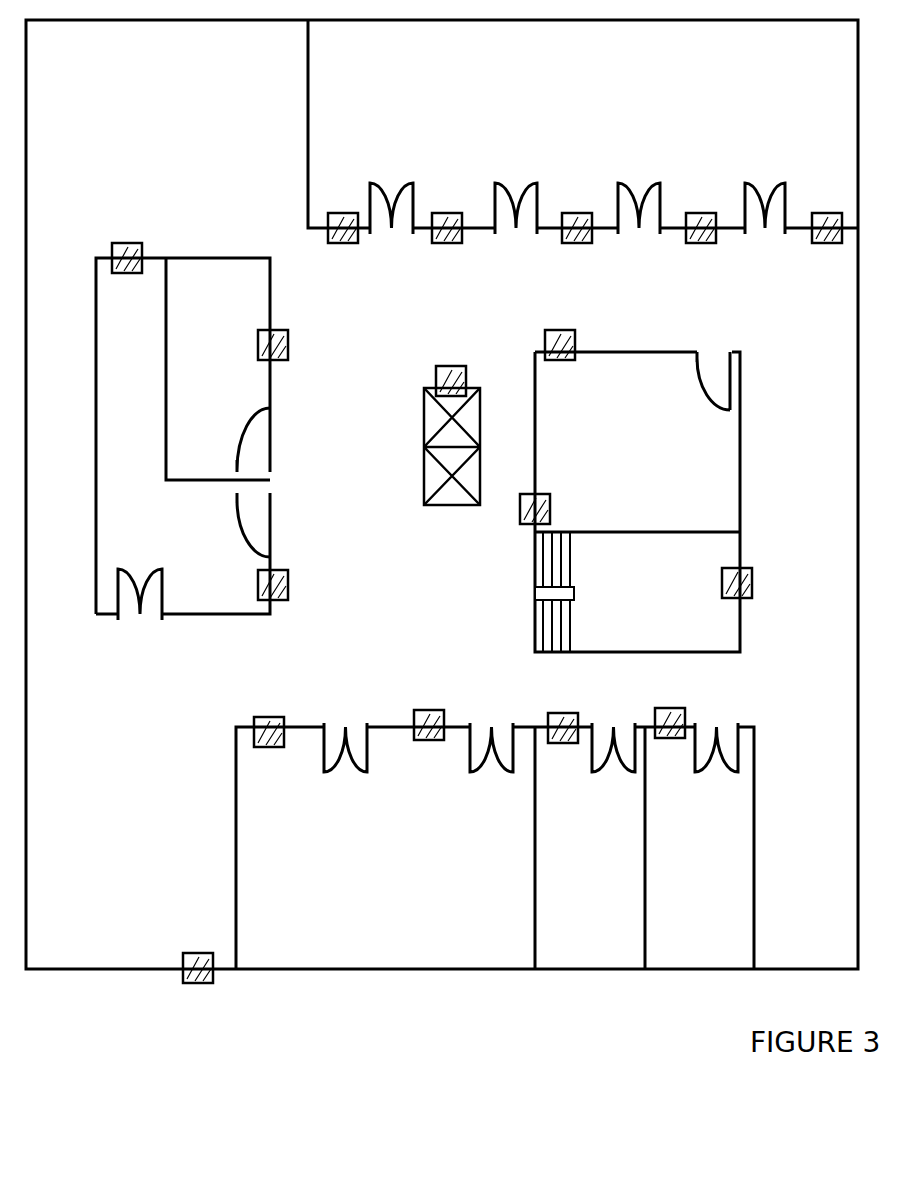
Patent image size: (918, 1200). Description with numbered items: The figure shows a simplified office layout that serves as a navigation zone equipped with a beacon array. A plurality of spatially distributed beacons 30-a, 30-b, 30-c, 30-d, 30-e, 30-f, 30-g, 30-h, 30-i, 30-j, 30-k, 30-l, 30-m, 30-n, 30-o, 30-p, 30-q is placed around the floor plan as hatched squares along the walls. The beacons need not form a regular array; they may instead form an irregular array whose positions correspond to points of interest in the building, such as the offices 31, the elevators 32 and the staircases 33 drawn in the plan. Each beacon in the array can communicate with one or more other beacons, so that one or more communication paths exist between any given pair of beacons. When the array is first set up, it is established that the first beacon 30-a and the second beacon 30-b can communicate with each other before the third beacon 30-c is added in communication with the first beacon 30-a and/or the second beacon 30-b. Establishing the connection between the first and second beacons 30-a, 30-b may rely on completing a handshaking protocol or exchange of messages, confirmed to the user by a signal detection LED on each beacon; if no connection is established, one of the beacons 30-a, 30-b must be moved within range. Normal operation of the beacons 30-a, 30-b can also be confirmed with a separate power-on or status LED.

The first beacon 30-a is at (345, 243).
The second beacon 30-b is at (447, 213).
The third beacon 30-c is at (577, 213).
The beacon 30-d is at (697, 213).
The beacon 30-e is at (820, 213).
The beacon 30-f is at (752, 580).
The beacon 30-g is at (550, 500).
The beacon 30-h is at (578, 340).
The beacon 30-i is at (445, 366).
The beacon 30-j is at (290, 345).
The beacon 30-k is at (290, 580).
The beacon 30-l is at (122, 243).
The beacon 30-m is at (290, 738).
The beacon 30-n is at (425, 710).
The beacon 30-o is at (570, 735).
The beacon 30-p is at (675, 730).
The beacon 30-q is at (205, 985).
The offices 31 is at (757, 846).
The elevators 32 is at (424, 497).
The staircases 33 is at (575, 545).